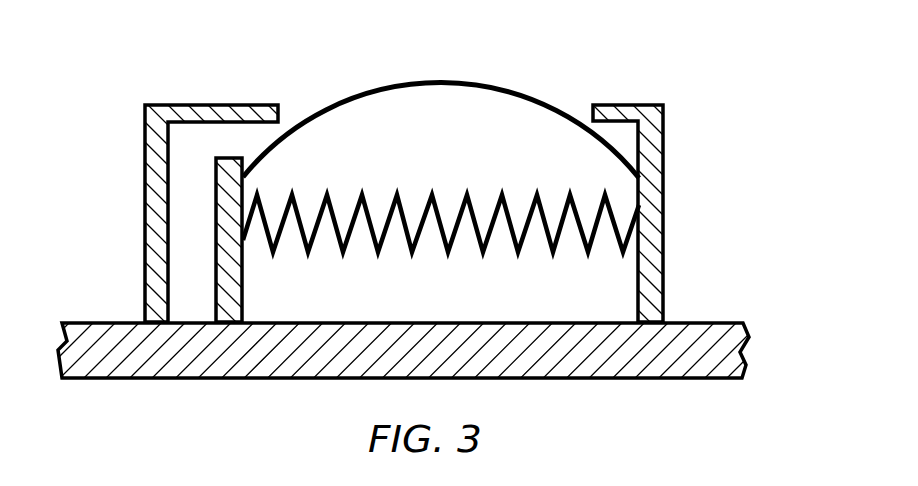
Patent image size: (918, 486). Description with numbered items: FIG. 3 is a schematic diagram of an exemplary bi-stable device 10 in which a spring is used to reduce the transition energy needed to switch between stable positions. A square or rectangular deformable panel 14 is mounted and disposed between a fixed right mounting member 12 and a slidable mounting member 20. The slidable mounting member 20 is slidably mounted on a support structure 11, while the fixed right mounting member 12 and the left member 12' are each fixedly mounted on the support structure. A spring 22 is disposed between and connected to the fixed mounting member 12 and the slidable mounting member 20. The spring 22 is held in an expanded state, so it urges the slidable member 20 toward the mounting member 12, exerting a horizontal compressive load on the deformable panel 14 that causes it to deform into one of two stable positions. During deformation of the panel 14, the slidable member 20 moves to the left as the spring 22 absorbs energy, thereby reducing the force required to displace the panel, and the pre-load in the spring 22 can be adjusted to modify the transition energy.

The pressure sensor assembly 10 is at (653, 78).
The support structure 11 is at (693, 380).
The fixed right mounting member 12 is at (680, 210).
The left member 12' is at (157, 217).
The deformable panel 14 is at (423, 80).
The slidable mounting member 20 is at (243, 272).
The spring 22 is at (432, 197).